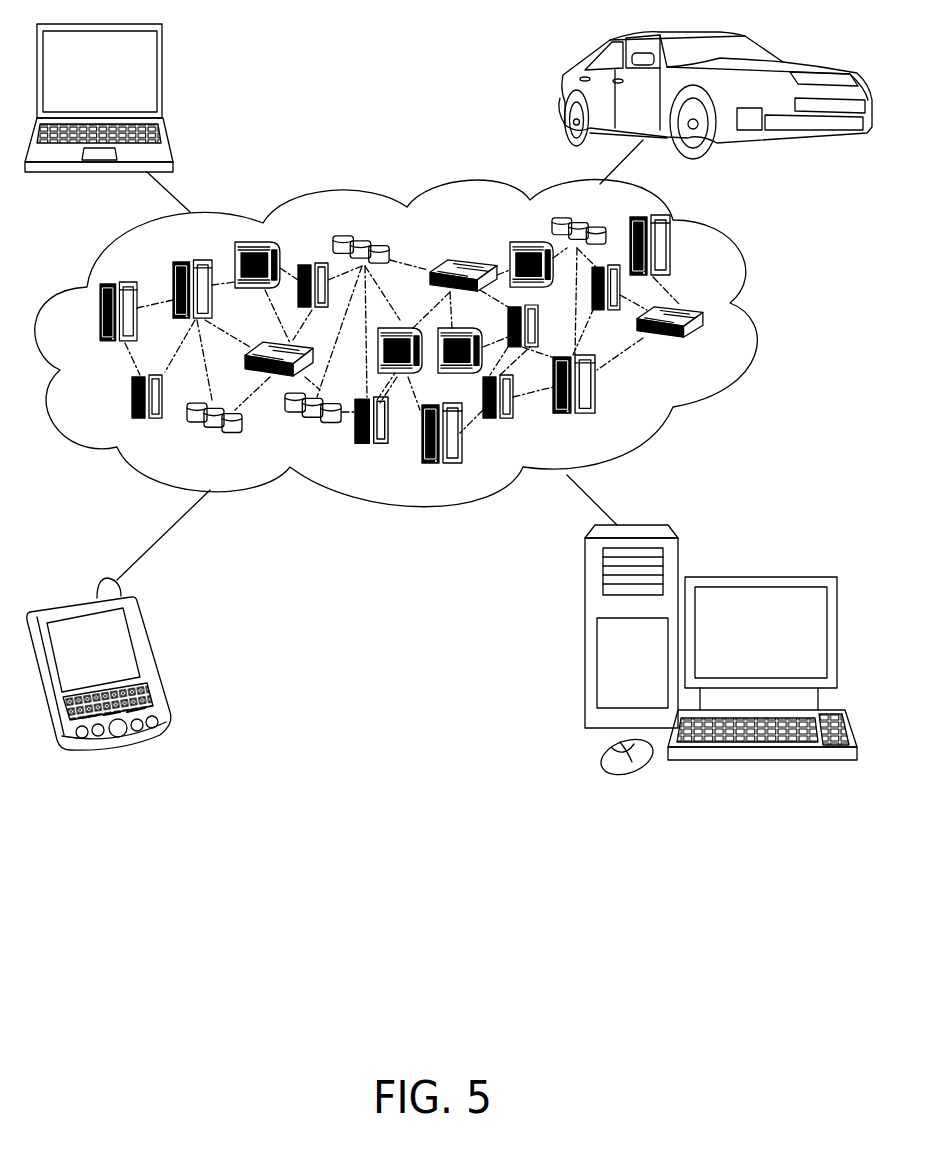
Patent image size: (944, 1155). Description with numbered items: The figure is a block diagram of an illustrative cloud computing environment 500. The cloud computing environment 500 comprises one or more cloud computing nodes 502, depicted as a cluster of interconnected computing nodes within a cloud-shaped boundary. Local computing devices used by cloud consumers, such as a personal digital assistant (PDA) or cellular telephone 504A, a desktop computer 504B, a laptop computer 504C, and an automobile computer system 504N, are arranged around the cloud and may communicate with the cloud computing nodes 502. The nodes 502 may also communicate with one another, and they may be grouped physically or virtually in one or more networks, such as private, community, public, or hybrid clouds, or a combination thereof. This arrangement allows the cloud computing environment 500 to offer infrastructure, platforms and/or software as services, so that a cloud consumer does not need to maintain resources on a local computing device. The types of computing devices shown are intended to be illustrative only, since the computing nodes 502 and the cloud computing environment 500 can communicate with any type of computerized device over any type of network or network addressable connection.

The cloud computing environment 500 is at (727, 307).
The cloud computing nodes 502 is at (705, 347).
The personal digital assistant (PDA) or cellular telephone 504A is at (142, 627).
The desktop computer 504B is at (747, 577).
The laptop computer 504C is at (163, 55).
The automobile computer system 504N is at (560, 95).